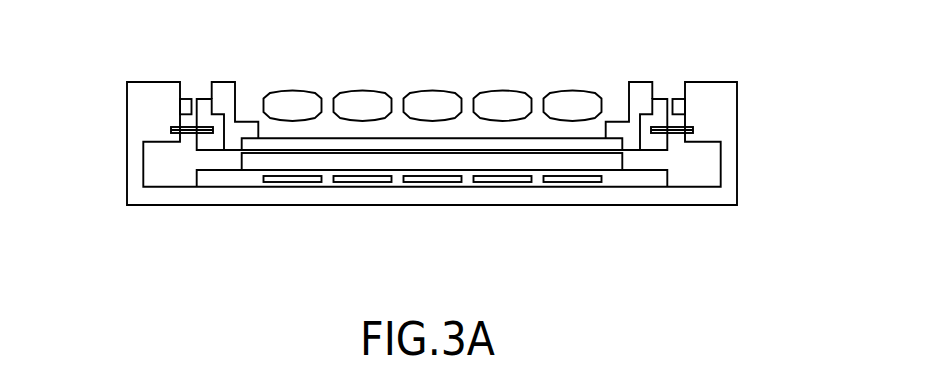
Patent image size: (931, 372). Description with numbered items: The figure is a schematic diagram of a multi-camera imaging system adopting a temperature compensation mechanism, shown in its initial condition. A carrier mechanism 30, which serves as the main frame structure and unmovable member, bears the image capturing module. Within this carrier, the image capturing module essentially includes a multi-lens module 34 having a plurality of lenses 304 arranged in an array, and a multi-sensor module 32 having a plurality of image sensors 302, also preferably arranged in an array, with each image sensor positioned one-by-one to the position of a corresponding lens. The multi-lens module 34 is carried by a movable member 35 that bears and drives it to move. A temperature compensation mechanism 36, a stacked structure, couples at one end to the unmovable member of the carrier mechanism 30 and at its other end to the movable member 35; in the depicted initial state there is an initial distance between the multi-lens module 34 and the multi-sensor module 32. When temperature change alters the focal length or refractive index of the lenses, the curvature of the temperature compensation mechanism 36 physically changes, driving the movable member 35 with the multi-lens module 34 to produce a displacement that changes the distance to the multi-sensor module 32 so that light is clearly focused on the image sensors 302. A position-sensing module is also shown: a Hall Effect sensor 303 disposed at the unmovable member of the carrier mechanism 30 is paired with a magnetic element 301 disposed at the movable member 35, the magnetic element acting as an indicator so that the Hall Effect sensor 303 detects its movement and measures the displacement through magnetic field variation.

The carrier mechanism 30 is at (689, 197).
The multi-sensor module 32 is at (623, 182).
The image sensors 302 is at (429, 182).
The lenses 304 is at (572, 101).
The multi-lens module 34 is at (645, 90).
The movable member 35 is at (661, 121).
The temperature compensation mechanism 36 is at (176, 127).
The magnetic element 301 is at (206, 104).
The Hall Effect sensor 303 is at (186, 99).